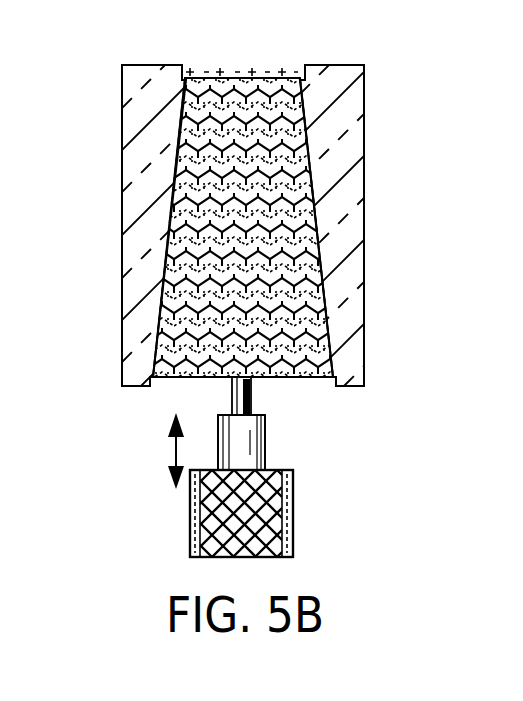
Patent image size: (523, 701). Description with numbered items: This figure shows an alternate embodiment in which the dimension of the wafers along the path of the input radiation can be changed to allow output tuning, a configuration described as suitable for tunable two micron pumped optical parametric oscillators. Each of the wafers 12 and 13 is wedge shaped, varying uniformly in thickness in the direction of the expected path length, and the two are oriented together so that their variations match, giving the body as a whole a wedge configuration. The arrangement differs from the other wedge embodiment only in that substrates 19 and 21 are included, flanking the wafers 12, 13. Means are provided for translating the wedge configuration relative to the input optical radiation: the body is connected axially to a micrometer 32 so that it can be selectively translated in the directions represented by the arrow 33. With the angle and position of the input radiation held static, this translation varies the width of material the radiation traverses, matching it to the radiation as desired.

The wafer 12 is at (220, 76).
The wafer 13 is at (297, 77).
The substrate 19 is at (130, 65).
The substrate 21 is at (352, 65).
The micrometer 32 is at (293, 503).
The arrow 33 is at (172, 450).